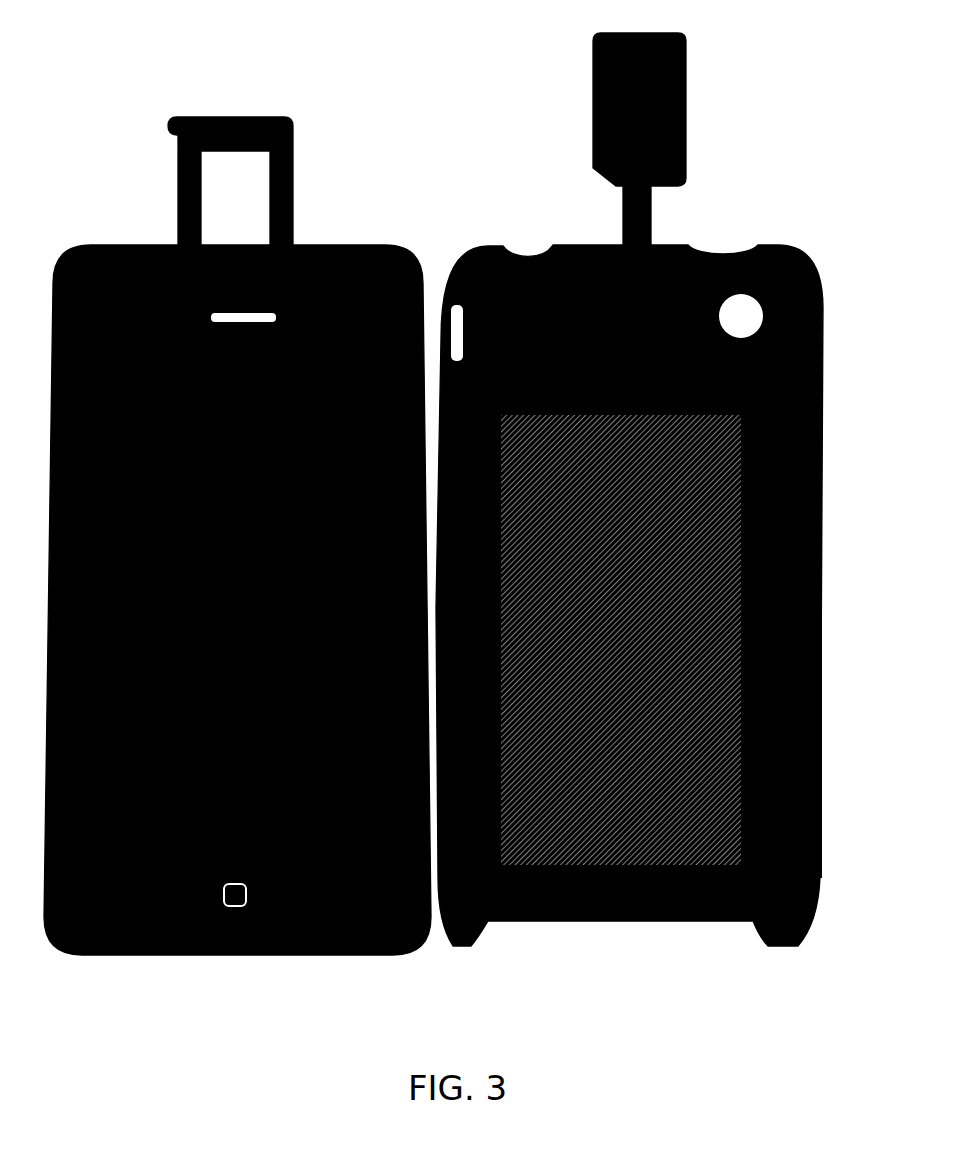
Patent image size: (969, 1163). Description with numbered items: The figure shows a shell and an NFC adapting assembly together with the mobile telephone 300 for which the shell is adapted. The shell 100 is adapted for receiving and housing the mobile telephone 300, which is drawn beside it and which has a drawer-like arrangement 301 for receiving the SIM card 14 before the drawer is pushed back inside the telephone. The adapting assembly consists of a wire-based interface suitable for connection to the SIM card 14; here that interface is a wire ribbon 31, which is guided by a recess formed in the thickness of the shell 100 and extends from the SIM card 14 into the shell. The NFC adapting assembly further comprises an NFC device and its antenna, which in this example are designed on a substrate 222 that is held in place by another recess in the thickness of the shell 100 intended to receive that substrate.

The SIM card 14 is at (658, 88).
The wire ribbon 31 is at (617, 217).
The shell 100 is at (678, 233).
The substrate 222 is at (807, 403).
The mobile telephone 300 is at (350, 945).
The drawer-like arrangement 301 is at (278, 163).